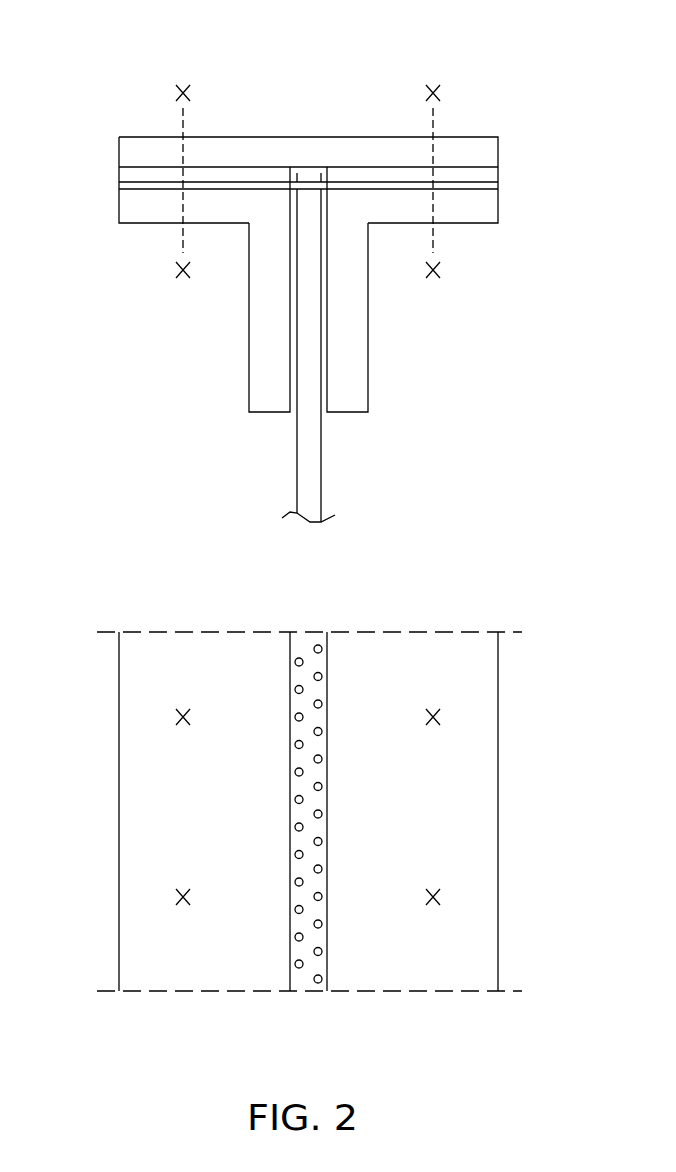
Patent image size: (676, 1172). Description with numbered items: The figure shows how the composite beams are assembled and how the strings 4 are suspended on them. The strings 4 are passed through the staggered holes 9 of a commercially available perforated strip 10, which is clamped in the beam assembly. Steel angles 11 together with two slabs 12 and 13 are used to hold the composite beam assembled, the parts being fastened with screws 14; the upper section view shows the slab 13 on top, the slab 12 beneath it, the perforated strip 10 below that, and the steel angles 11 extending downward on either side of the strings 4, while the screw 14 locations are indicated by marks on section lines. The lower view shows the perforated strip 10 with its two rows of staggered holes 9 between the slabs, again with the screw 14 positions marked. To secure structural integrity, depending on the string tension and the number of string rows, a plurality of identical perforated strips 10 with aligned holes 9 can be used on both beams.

The strings 4 is at (293, 437).
The staggered holes 9 is at (298, 658).
The perforated strip 10 is at (153, 185).
The steel angles 11 is at (260, 303).
The slab 12 is at (127, 175).
The slab 13 is at (352, 147).
The screws 14 is at (188, 83).